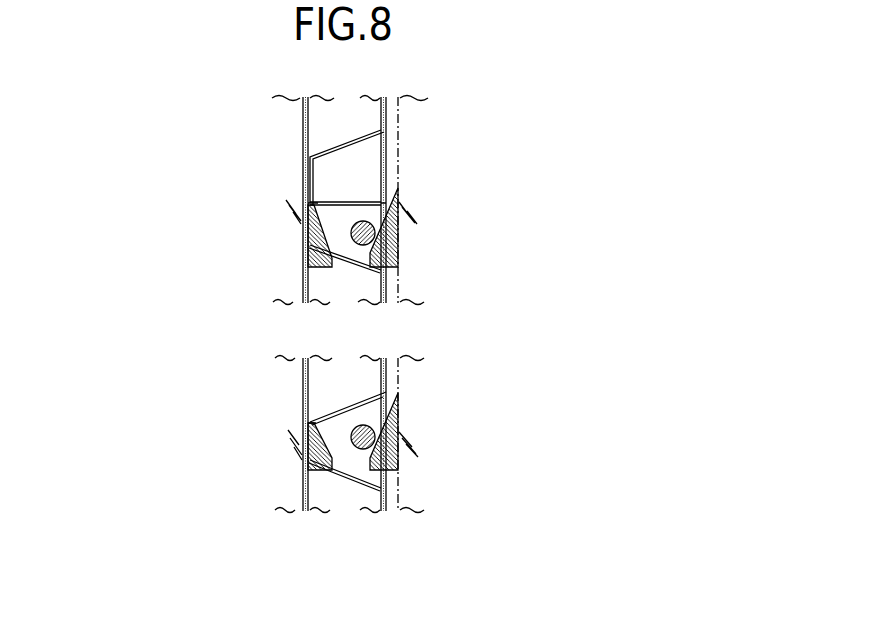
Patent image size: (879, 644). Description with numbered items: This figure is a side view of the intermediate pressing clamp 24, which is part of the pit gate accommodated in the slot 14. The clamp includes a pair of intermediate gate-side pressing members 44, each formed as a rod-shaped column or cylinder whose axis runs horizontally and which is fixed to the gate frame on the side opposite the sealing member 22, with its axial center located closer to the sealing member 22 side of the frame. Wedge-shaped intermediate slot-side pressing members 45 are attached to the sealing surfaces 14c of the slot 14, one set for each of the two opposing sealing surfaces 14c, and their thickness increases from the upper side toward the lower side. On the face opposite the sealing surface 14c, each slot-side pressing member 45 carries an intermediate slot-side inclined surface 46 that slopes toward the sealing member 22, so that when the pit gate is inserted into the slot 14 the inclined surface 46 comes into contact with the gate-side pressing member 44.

The slot 14 is at (395, 511).
The sealing surface 14c is at (301, 129).
The sealing member 22 is at (302, 283).
The intermediate pressing clamp 24 is at (438, 376).
The intermediate gate-side pressing member 44 is at (362, 246).
The intermediate slot-side pressing member 45 is at (310, 242).
The intermediate slot-side inclined surface 46 is at (312, 201).